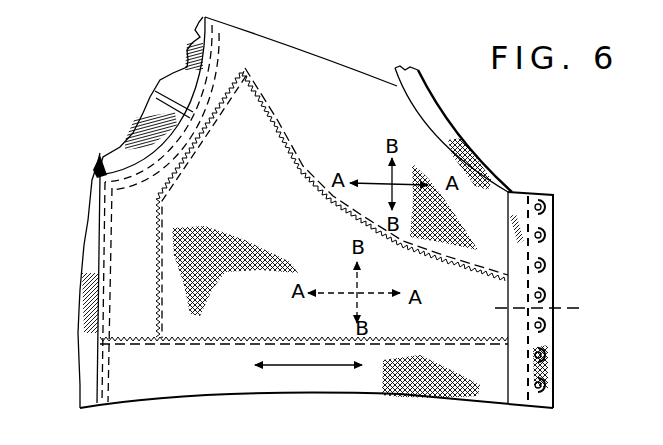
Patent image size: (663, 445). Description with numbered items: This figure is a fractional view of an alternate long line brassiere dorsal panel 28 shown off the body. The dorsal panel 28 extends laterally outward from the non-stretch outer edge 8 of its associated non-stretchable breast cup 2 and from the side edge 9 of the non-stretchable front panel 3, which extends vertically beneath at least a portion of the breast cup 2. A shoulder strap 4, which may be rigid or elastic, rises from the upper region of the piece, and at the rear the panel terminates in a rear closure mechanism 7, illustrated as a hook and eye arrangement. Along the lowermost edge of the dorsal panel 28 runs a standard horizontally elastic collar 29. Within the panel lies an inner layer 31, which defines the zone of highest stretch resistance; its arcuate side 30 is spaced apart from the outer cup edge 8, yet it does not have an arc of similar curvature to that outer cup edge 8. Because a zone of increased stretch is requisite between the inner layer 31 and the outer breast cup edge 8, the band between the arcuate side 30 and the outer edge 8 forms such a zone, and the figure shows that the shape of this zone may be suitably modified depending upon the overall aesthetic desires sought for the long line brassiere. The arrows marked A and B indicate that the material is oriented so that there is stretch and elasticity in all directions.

The breast cup 2 is at (177, 78).
The front panel 3 is at (81, 280).
The shoulder strap 4 is at (461, 138).
The rear closure mechanism 7 is at (546, 237).
The outer edge 8 is at (218, 42).
The front panel side edge 9 is at (108, 323).
The dorsal panel 28 is at (347, 71).
The horizontally elastic collar 29 is at (328, 393).
The arcuate side 30 is at (236, 105).
The inner layer 31 is at (553, 318).